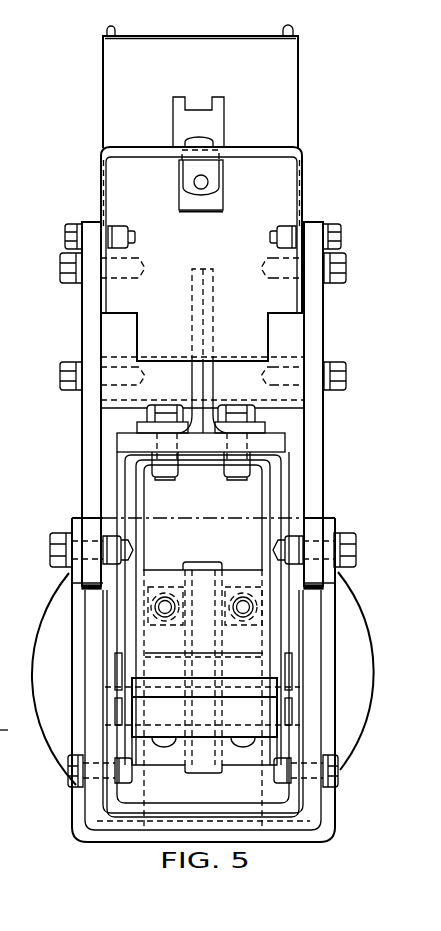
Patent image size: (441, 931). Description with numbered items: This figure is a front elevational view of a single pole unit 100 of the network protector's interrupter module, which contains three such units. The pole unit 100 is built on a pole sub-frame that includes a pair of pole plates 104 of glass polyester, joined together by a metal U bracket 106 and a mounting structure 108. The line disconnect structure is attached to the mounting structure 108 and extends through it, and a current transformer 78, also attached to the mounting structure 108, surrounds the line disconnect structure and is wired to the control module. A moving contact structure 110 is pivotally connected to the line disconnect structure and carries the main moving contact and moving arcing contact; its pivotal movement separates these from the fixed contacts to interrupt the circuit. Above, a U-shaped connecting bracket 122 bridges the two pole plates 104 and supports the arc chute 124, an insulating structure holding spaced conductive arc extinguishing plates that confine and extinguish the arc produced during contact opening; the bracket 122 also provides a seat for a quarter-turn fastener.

The pole unit 100 is at (223, 10).
The arc chute 124 is at (103, 72).
The U-shaped connecting bracket 122 is at (113, 152).
The pole plates 104 is at (82, 302).
The moving contact structure 110 is at (288, 433).
The current transformer 78 is at (372, 620).
The mounting structure 108 is at (88, 842).
The metal U bracket 106 is at (245, 810).